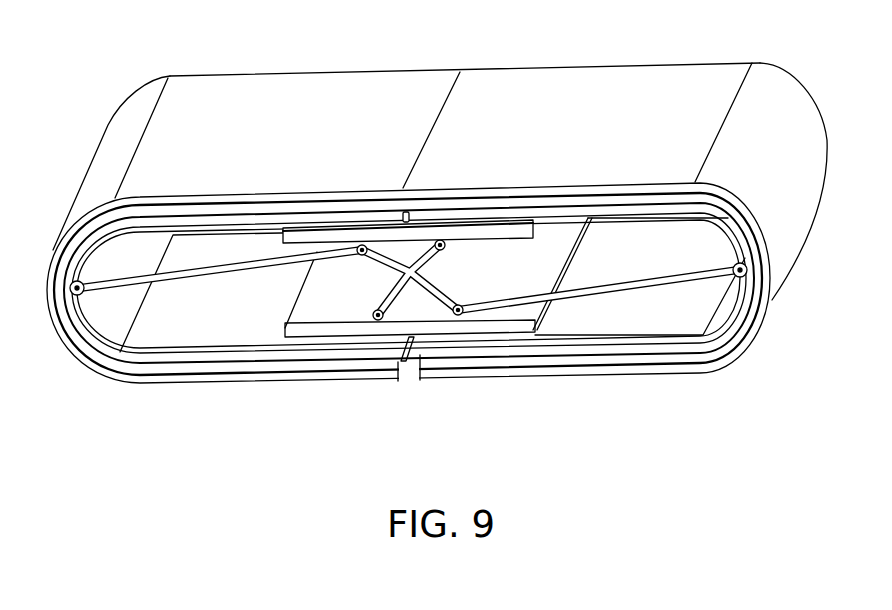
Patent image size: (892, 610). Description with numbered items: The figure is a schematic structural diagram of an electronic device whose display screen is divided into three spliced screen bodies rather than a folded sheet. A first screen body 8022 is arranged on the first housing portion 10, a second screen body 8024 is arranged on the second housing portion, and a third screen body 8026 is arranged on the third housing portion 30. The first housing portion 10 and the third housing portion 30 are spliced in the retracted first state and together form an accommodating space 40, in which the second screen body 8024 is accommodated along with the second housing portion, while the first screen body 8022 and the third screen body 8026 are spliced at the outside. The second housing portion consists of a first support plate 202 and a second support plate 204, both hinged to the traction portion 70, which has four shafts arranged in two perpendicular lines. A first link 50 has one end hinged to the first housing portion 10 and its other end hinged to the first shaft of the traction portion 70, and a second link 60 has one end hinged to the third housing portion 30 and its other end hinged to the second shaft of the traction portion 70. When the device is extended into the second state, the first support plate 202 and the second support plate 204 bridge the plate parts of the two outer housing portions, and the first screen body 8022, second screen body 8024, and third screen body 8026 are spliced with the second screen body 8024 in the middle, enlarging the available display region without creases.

The first housing portion 10 is at (162, 337).
The third housing portion 30 is at (615, 318).
The accommodating space 40 is at (678, 226).
The first link 50 is at (193, 268).
The second link 60 is at (609, 286).
The traction portion 70 is at (405, 278).
The first support plate 202 is at (461, 240).
The second support plate 204 is at (300, 325).
The first screen body 8022 is at (275, 127).
The second screen body 8024 is at (380, 222).
The third screen body 8026 is at (530, 122).